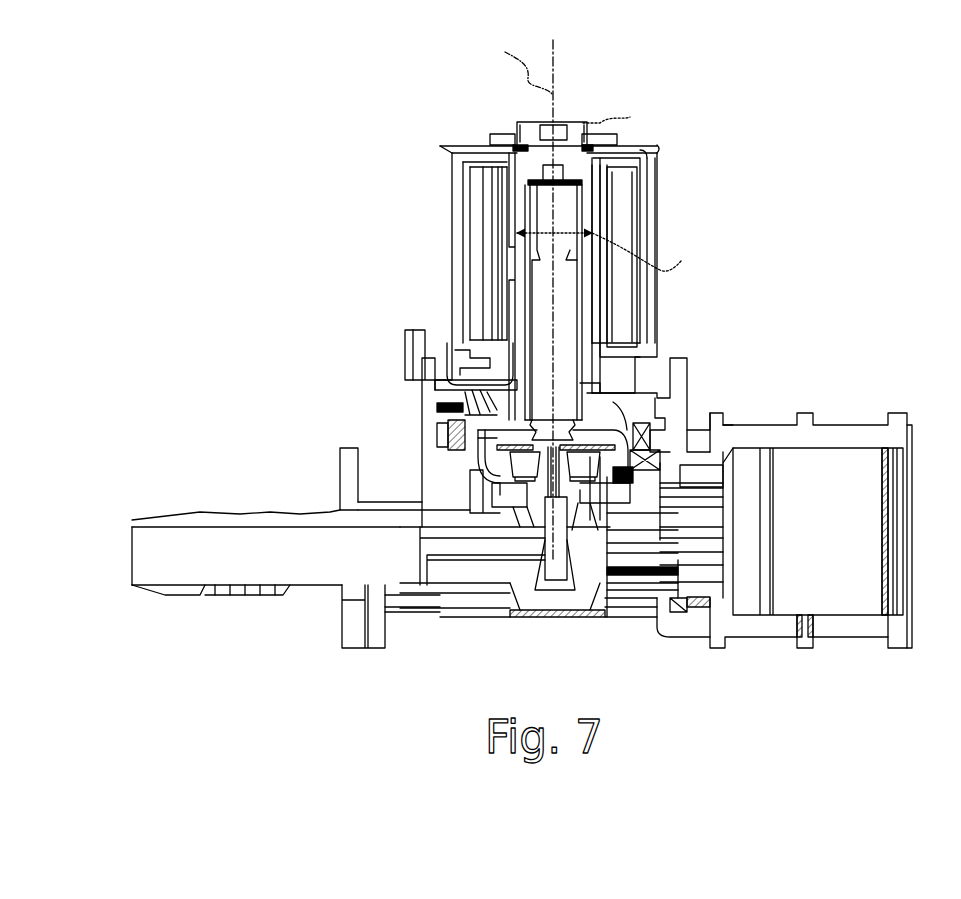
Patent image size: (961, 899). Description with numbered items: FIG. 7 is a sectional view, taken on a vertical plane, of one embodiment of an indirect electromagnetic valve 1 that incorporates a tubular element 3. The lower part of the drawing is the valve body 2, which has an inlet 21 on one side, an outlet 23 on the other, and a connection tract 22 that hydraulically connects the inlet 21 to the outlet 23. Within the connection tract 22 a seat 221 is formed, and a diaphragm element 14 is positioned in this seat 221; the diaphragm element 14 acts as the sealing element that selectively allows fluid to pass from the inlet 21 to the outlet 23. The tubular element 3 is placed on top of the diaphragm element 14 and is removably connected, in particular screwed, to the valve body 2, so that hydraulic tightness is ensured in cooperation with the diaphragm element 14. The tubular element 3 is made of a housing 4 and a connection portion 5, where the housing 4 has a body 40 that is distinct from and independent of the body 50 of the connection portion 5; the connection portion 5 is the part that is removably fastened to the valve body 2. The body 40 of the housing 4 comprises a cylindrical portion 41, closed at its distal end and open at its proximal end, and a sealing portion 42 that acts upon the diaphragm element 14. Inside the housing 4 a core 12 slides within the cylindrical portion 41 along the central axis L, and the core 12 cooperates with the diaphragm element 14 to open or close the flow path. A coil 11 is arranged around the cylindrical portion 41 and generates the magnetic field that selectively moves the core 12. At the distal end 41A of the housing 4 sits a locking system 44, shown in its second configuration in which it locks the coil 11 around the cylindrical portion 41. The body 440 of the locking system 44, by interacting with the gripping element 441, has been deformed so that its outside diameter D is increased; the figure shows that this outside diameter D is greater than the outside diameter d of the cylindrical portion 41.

The electromagnetic valve 1 is at (200, 198).
The valve body 2 is at (442, 500).
The tubular element 3 is at (478, 120).
The housing 4 is at (500, 267).
The connection portion 5 is at (662, 362).
The coil 11 is at (628, 190).
The core 12 is at (538, 368).
The diaphragm element 14 is at (573, 520).
The inlet 21 is at (920, 492).
The connection tract 22 is at (507, 577).
The outlet 23 is at (127, 557).
The body of housing 40 is at (520, 325).
The cylindrical portion 41 is at (603, 263).
The distal end 41A is at (605, 200).
The sealing portion 42 is at (483, 412).
The locking system 44 is at (587, 103).
The body of connection portion 50 is at (660, 405).
The seat 221 is at (660, 481).
The body of locking system 440 is at (518, 128).
The gripping element 441 is at (515, 148).
The axis L is at (521, 67).
The outside diameter of locking system body D is at (615, 110).
The outside diameter of cylindrical portion d is at (607, 253).